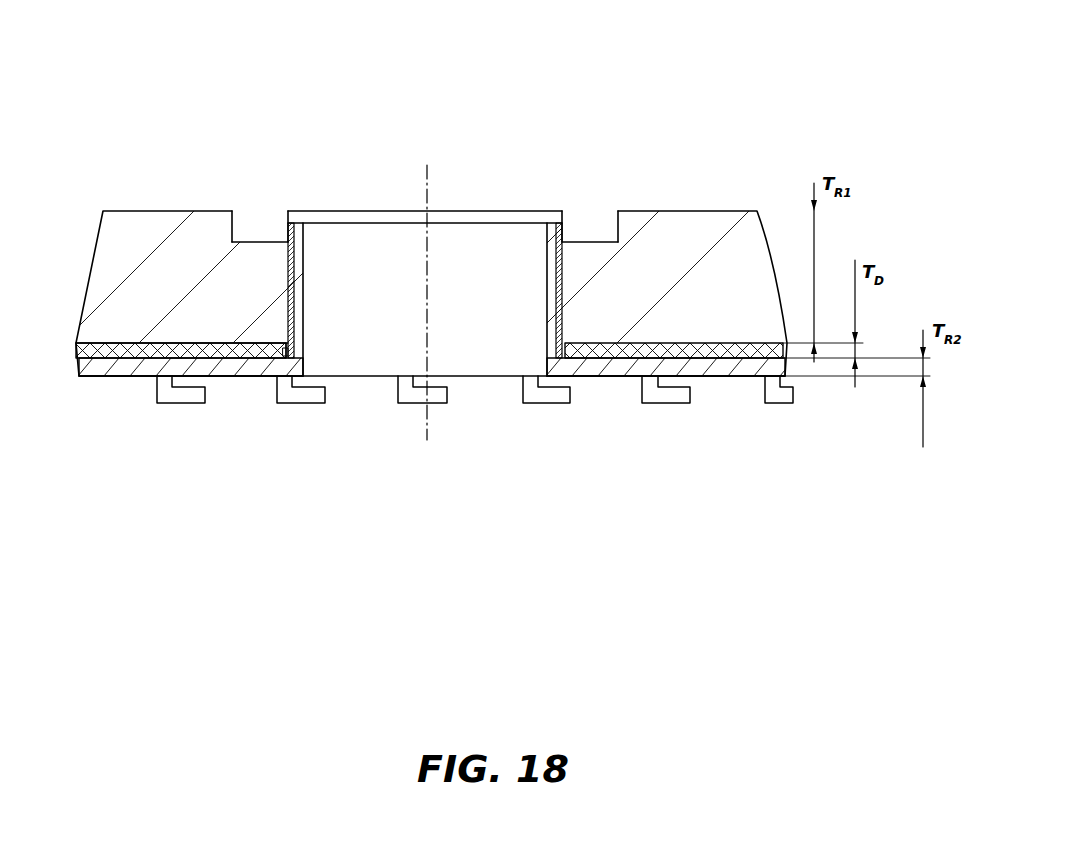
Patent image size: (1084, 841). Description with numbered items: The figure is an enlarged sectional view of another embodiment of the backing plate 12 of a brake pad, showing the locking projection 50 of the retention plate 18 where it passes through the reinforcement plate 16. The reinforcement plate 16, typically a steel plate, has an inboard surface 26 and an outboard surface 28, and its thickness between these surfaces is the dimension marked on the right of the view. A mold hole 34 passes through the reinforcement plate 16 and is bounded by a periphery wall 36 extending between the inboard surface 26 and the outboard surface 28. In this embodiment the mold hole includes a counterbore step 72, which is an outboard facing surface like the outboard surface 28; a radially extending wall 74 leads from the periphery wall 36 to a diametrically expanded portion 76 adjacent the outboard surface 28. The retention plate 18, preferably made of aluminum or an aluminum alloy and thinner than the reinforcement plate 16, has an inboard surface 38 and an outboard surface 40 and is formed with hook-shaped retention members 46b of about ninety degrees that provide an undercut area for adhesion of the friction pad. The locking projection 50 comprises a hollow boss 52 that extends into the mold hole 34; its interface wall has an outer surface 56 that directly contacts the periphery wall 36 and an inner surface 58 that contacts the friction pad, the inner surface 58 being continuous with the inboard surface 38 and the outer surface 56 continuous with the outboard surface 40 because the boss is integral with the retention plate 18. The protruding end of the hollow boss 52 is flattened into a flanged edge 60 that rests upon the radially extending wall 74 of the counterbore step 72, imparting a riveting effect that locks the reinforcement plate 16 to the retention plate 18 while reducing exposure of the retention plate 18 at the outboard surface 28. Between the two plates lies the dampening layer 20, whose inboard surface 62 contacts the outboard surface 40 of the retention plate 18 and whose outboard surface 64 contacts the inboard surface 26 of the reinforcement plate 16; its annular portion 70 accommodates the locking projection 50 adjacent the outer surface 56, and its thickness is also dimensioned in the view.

The backing plate 12 is at (666, 85).
The reinforcement plate 16 is at (643, 285).
The retention plate 18 is at (728, 368).
The dampening layer 20 is at (705, 347).
The inboard surface 26 is at (230, 343).
The outboard surface 28 is at (167, 211).
The mold hole 34 is at (443, 222).
The periphery wall 36 is at (563, 333).
The inboard surface 38 is at (115, 376).
The outboard surface 40 is at (127, 347).
The retention members 46b is at (200, 393).
The locking projection 50 is at (290, 232).
The hollow boss 52 is at (382, 230).
The outer surface 56 is at (566, 277).
The inner surface 58 is at (326, 236).
The flanged edge 60 is at (277, 232).
The inboard surface 62 is at (120, 363).
The outboard surface 64 is at (138, 345).
The annular portion 70 is at (290, 350).
The counterbore step 72 is at (240, 232).
The radially extending wall 74 is at (611, 237).
The diametrically expanded portion 76 is at (607, 236).